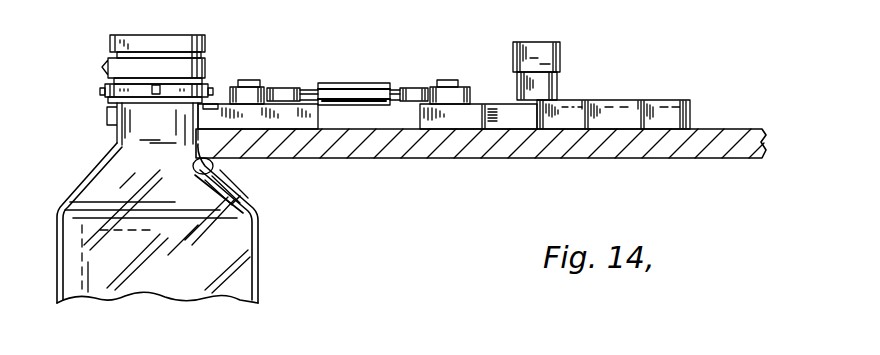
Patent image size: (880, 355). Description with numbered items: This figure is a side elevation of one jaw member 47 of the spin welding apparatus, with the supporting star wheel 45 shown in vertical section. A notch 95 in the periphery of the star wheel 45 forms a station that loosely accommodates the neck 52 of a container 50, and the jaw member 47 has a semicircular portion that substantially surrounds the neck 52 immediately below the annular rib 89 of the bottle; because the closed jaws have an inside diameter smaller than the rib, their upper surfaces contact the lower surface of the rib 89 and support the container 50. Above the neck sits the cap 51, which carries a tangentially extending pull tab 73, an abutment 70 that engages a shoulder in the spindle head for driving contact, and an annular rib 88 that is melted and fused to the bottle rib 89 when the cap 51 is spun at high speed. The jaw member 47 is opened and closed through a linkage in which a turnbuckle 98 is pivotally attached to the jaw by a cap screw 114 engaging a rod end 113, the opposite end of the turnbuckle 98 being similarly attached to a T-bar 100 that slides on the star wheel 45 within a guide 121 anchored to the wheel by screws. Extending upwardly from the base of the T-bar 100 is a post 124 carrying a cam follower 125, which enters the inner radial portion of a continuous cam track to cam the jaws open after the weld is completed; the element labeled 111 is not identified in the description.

The star wheel 45 is at (652, 160).
The jaw member 47 is at (277, 118).
The container 50 is at (82, 196).
The cap 51 is at (178, 36).
The neck 52 is at (120, 137).
The abutment 70 is at (156, 86).
The pull tab 73 is at (107, 66).
The annular rib 88 is at (108, 92).
The annular rib 89 is at (175, 102).
The notch 95 is at (212, 172).
The turnbuckle 98 is at (375, 84).
The T-bar 100 is at (504, 123).
The shaft 111 is at (300, 90).
The rod end 113 is at (268, 87).
The cap screw 114 is at (245, 80).
The guide 121 is at (657, 100).
The post 124 is at (558, 80).
The cam follower 125 is at (560, 50).